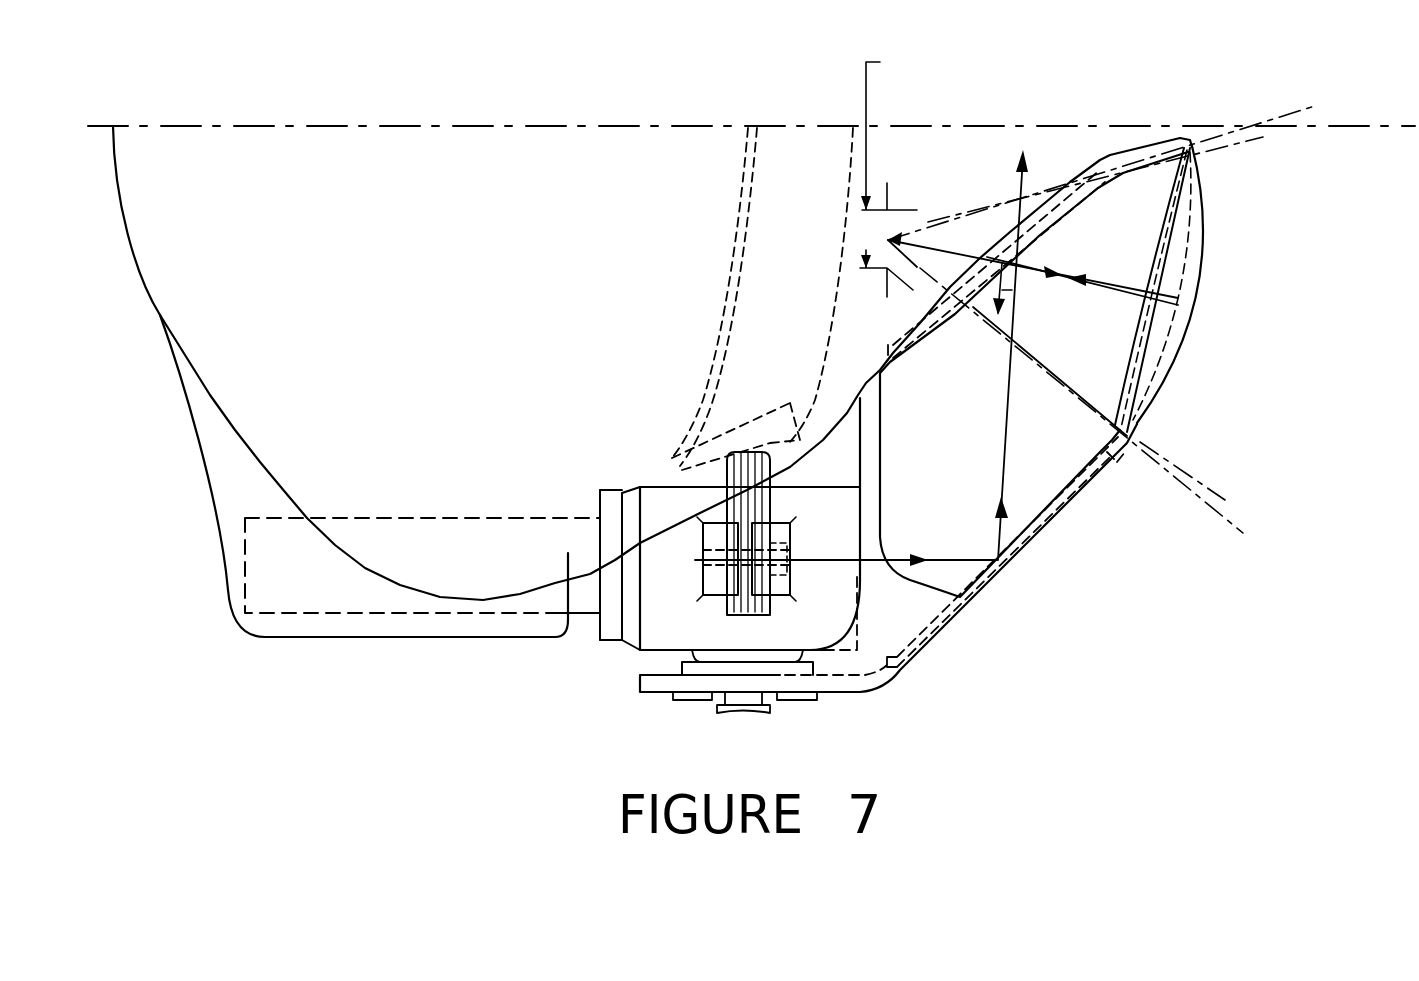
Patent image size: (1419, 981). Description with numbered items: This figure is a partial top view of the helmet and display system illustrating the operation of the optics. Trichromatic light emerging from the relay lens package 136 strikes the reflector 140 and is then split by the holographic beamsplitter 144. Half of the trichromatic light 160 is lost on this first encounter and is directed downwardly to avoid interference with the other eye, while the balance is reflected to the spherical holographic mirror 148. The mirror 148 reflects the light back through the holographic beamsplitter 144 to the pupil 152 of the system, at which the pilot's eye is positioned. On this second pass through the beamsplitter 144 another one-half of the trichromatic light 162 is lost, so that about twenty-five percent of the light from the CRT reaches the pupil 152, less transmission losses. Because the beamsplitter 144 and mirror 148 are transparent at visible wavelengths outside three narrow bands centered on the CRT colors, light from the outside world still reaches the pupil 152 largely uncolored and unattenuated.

The relay lens package 136 is at (652, 632).
The reflector 140 is at (1003, 563).
The holographic beamsplitter 144 is at (1083, 203).
The spherical holographic mirror 148 is at (1180, 298).
The pupil 152 is at (888, 240).
The trichromatic light 160 is at (930, 223).
The trichromatic light 162 is at (1012, 290).